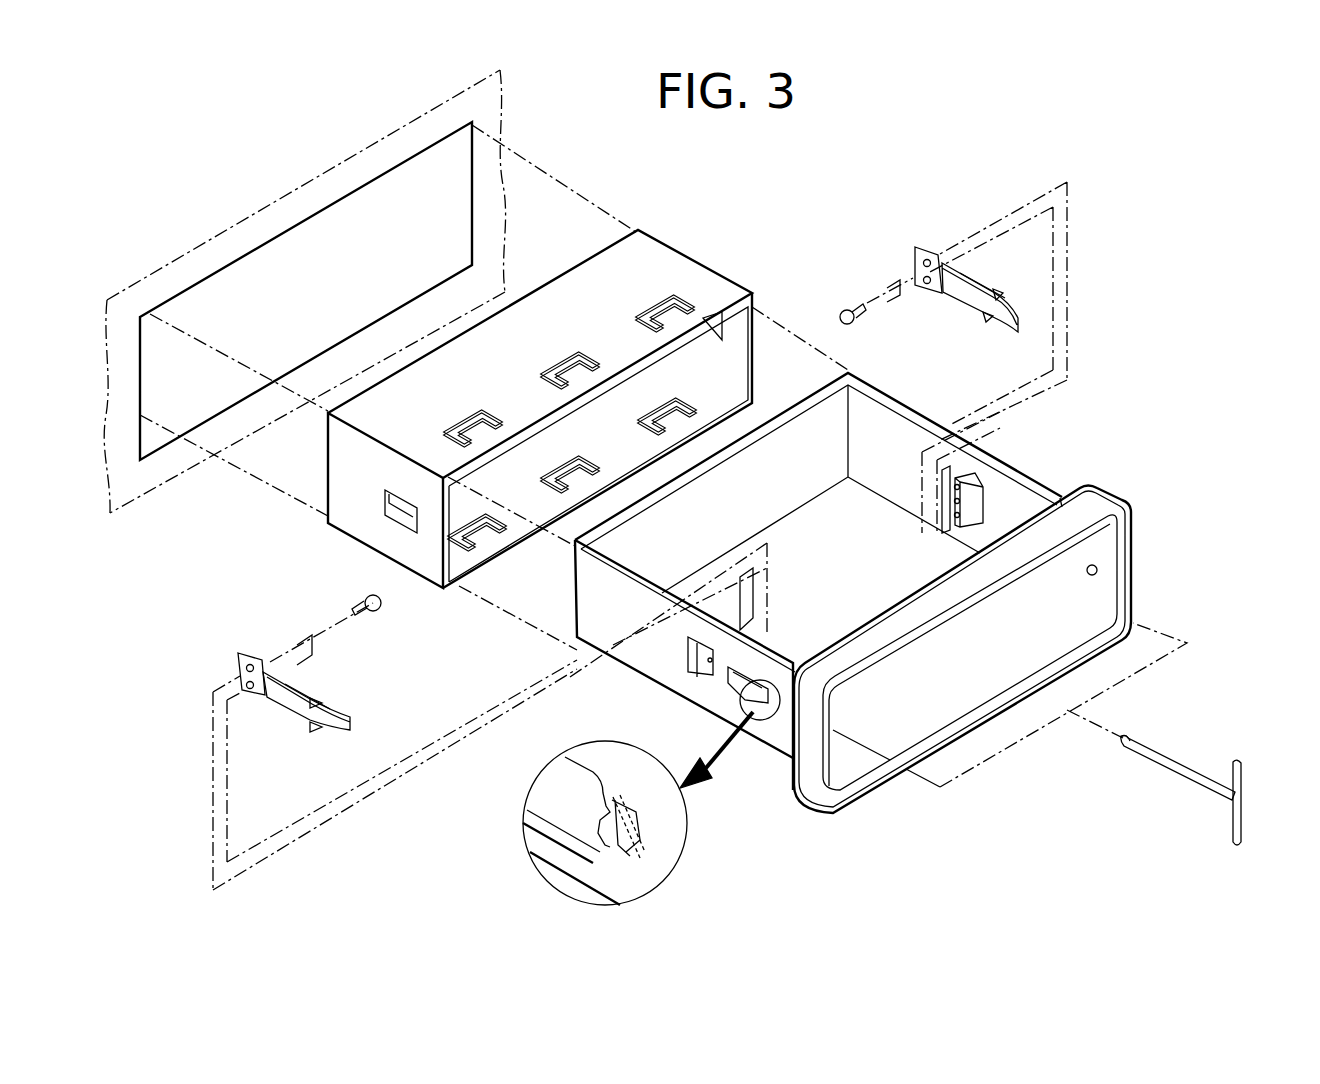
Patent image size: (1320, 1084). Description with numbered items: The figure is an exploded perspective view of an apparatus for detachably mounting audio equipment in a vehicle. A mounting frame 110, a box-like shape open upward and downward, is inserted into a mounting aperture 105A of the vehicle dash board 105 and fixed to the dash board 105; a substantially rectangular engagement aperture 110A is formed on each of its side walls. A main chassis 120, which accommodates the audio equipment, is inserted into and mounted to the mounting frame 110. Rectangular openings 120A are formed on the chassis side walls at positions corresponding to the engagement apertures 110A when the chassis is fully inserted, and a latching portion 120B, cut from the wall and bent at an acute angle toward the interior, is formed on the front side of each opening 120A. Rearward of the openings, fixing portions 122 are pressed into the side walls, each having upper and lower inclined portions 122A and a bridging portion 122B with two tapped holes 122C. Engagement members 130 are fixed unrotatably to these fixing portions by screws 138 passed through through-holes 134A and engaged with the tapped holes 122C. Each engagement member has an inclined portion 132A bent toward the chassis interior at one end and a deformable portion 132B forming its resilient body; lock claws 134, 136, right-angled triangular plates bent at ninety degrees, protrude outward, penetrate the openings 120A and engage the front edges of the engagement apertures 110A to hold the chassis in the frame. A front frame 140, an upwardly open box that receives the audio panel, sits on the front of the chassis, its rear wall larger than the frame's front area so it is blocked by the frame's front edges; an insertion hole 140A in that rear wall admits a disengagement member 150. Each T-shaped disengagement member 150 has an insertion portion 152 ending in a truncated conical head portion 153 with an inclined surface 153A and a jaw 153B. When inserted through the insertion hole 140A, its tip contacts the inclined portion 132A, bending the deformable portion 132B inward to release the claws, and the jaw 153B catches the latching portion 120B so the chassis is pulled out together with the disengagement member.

The dash board 105 is at (210, 255).
The mounting aperture 105A is at (307, 277).
The mounting frame 110 is at (673, 233).
The engagement aperture 110A is at (380, 496).
The main chassis 120 is at (1022, 435).
The opening 120A is at (733, 677).
The latching portion 120B is at (640, 837).
The fixing portion 122 is at (1027, 486).
The inclined portion 122A is at (973, 510).
The bridging portion 122B is at (932, 513).
The tapped hole 122C is at (957, 523).
The engagement member 130 is at (634, 526).
The inclined portion 132A is at (1017, 313).
The deformable portion 132B is at (963, 267).
The lock claw 134 is at (920, 292).
The through-hole 134A is at (920, 255).
The lock claw 136 is at (993, 317).
The screw 138 is at (840, 310).
The front frame 140 is at (1005, 701).
The insertion hole 140A is at (1097, 568).
The disengagement member 150 is at (1111, 743).
The insertion portion 152 is at (1187, 773).
The head portion 153 is at (1127, 799).
The inclined surface 153A is at (1123, 742).
The jaw 153B is at (1128, 747).